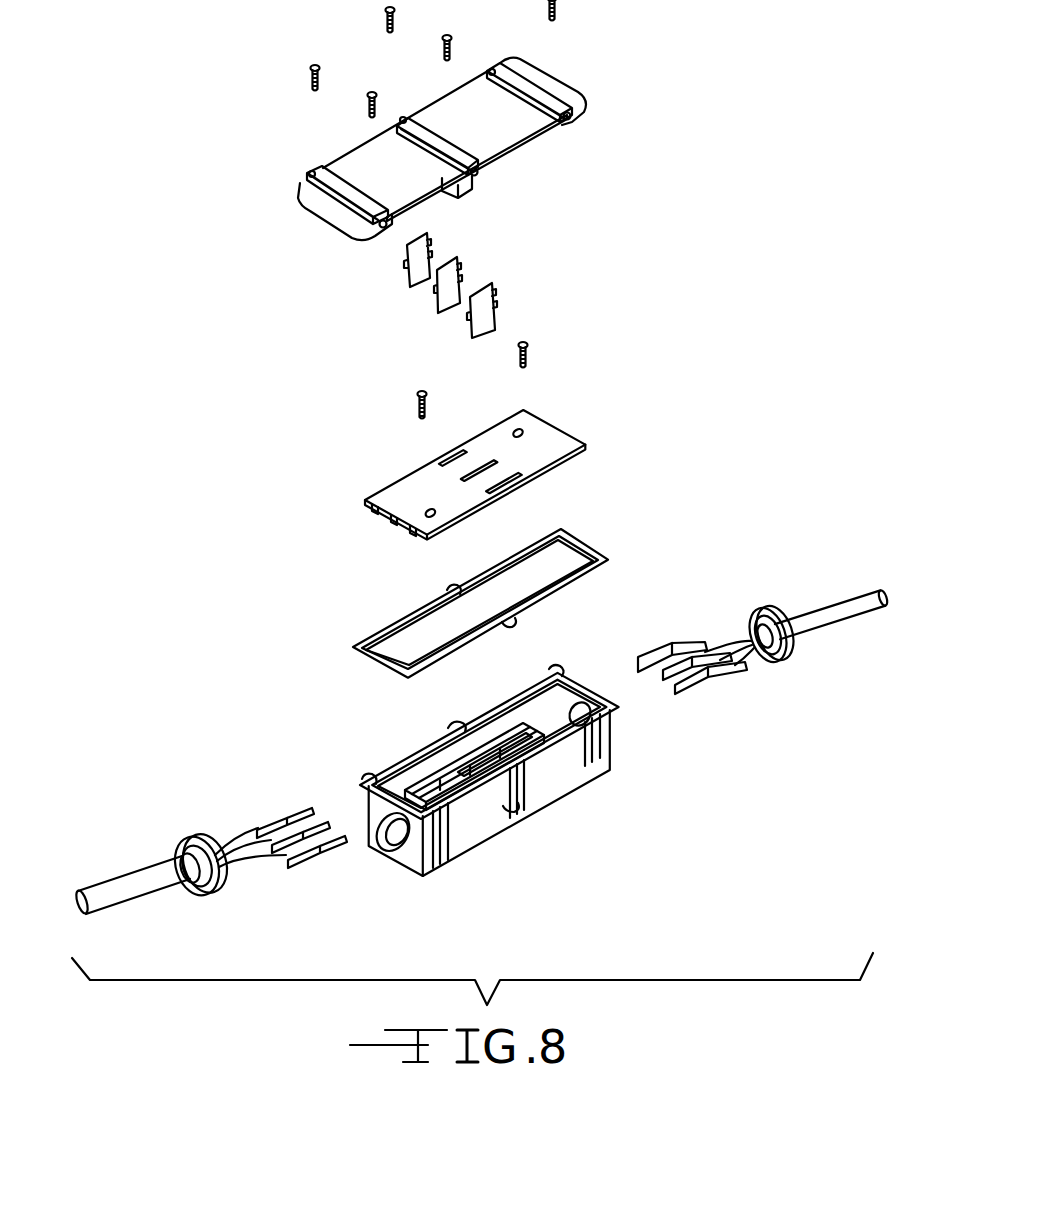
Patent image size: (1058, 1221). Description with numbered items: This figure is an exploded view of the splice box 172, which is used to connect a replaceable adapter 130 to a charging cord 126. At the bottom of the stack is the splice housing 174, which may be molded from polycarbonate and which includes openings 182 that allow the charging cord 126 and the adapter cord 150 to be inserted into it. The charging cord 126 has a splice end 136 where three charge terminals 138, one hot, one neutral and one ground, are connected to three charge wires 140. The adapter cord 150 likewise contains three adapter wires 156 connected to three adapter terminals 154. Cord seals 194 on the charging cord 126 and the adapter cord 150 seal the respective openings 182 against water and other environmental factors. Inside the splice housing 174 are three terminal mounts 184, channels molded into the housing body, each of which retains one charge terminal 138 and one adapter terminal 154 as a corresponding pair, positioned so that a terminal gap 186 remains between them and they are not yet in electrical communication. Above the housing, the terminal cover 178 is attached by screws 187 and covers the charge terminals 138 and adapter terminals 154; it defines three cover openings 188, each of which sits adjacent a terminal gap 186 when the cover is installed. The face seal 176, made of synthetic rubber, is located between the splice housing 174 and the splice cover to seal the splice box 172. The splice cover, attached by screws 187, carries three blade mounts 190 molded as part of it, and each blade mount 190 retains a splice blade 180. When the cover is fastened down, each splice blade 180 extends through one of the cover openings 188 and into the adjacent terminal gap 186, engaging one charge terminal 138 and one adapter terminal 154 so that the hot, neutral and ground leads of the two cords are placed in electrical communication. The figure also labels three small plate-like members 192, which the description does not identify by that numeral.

The charging cord 126 is at (178, 906).
The replaceable adapter 130 is at (835, 585).
The splice end 136 is at (148, 868).
The charge terminals 138 is at (270, 820).
The charge wires 140 is at (223, 837).
The adapter cord 150 is at (810, 612).
The adapter terminals 154 is at (687, 677).
The adapter wires 156 is at (740, 660).
The splice box 172 is at (188, 284).
The splice housing 174 is at (400, 766).
The face seal 176 is at (380, 628).
The terminal cover 178 is at (390, 493).
The splice blades 180 is at (357, 167).
The openings 182 is at (405, 836).
The terminal mounts 184 is at (457, 763).
The terminal gap 186 is at (483, 752).
The screws 187 is at (557, 12).
The cover openings 188 is at (487, 465).
The blade mounts 190 is at (475, 184).
The contact cards 192 is at (472, 322).
The cord seals 194 is at (776, 662).